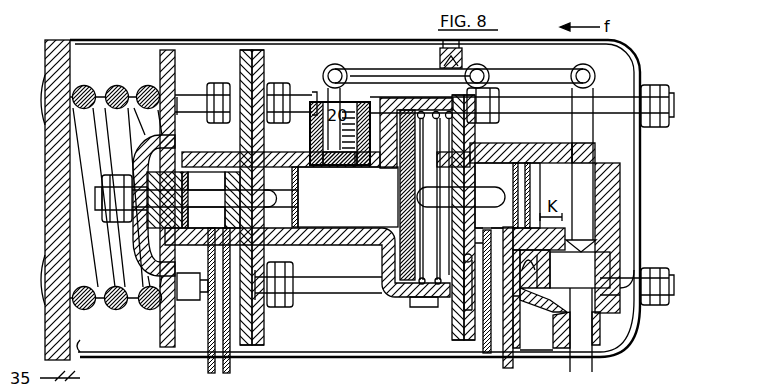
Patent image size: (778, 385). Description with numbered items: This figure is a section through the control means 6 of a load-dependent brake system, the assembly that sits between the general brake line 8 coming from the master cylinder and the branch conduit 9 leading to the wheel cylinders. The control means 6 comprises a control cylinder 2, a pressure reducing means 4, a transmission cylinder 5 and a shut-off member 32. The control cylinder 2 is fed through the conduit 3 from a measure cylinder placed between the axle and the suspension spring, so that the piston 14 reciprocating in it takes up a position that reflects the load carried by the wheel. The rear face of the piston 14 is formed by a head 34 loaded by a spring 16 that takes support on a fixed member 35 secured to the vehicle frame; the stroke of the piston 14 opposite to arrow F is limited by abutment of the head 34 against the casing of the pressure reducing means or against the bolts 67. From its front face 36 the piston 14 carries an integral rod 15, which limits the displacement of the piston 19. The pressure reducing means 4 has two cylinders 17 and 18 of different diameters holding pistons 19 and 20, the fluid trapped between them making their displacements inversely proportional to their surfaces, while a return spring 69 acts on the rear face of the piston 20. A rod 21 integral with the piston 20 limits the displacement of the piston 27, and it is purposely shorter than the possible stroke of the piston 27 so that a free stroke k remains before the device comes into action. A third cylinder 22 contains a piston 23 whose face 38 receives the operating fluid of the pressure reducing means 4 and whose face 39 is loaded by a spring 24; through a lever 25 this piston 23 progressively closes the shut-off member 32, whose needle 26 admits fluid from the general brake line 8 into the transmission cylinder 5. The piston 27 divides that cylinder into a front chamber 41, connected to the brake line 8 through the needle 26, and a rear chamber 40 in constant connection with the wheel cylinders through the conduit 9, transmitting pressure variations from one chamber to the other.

The control cylinder 2 is at (203, 178).
The conduit 3 is at (212, 373).
The pressure reducing means 4 is at (368, 245).
The transmission cylinder 5 is at (518, 164).
The control means 6 is at (624, 50).
The general brake line 8 is at (592, 361).
The branch conduit 9 is at (480, 362).
The piston 14 is at (170, 172).
The rod 15 is at (188, 196).
The spring 16 is at (92, 86).
The cylinder 17 is at (331, 245).
The cylinder 18 is at (431, 98).
The piston 19 is at (298, 213).
The piston 20 is at (408, 186).
The rod 21 is at (487, 200).
The third cylinder 22 is at (312, 141).
The piston 23 is at (364, 130).
The spring 24 is at (352, 102).
The lever 25 is at (363, 70).
The needle 26 is at (595, 247).
The piston 27 is at (532, 190).
The shut-off member 32 is at (587, 226).
The head 34 is at (175, 64).
The fixed member 35 is at (82, 362).
The front face 36 is at (206, 217).
The face 38 is at (341, 167).
The face 39 is at (336, 167).
The rear chamber 40 is at (490, 165).
The front chamber 41 is at (606, 174).
The bolts 67 is at (218, 82).
The return spring 69 is at (418, 295).